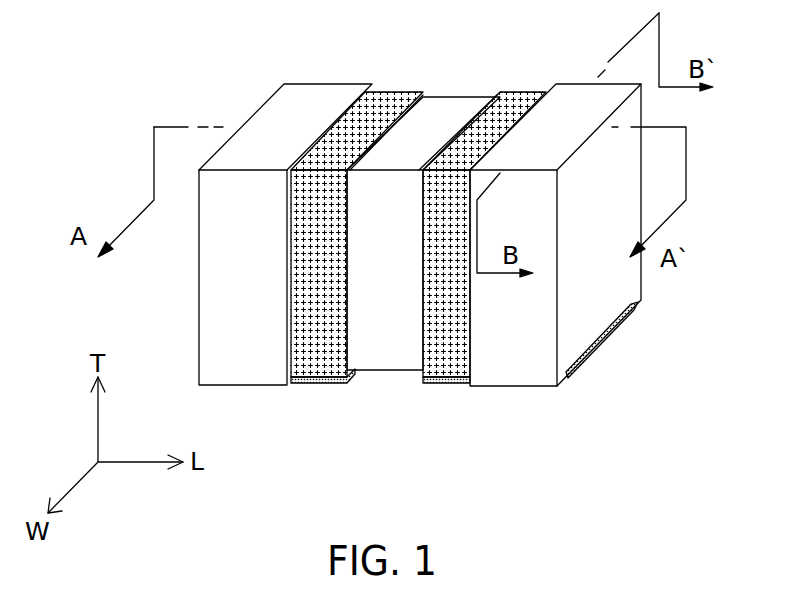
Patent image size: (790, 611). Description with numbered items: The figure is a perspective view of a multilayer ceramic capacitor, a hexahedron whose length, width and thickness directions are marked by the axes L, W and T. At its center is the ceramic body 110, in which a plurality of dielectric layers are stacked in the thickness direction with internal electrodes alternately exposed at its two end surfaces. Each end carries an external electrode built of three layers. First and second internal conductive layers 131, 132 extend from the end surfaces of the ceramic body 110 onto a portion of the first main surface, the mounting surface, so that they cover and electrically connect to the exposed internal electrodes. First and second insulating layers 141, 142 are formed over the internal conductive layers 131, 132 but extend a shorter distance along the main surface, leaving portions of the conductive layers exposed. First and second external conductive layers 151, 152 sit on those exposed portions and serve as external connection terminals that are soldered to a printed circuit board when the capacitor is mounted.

The ceramic body 110 is at (450, 107).
The first internal conductive layer 131 is at (373, 110).
The second internal conductive layer 132 is at (510, 103).
The first insulating layer 141 is at (302, 103).
The second insulating layer 142 is at (625, 278).
The first external conductive layer 151 is at (323, 383).
The second external conductive layer 152 is at (443, 383).